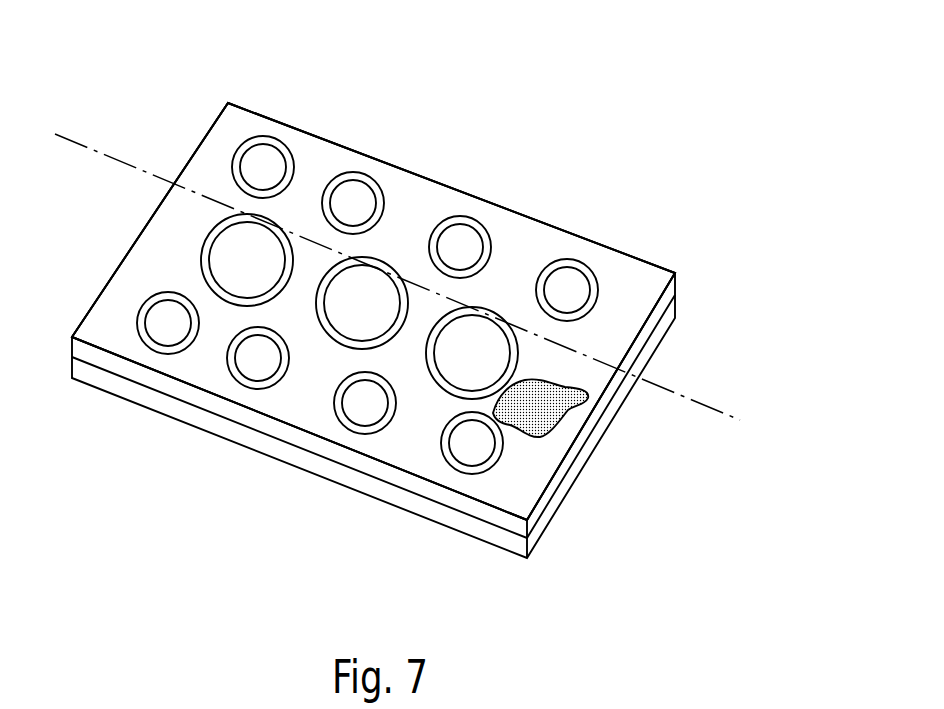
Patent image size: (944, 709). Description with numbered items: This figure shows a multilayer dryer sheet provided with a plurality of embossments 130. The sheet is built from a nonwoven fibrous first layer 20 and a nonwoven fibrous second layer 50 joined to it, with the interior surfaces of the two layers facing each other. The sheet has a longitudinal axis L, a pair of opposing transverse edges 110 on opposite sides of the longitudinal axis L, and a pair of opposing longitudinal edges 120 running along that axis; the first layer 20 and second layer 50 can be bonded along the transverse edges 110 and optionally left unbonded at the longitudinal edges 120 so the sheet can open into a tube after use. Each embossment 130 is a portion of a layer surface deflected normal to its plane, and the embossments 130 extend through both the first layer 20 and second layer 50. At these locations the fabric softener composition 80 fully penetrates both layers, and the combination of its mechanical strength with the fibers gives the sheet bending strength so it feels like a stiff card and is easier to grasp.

The first layer 20 is at (547, 527).
The second layer 50 is at (623, 292).
The fabric softener composition 80 is at (563, 417).
The transverse edges 110 is at (605, 246).
The longitudinal edges 120 is at (202, 140).
The embossments 130 is at (377, 260).
The longitudinal axis L is at (702, 402).